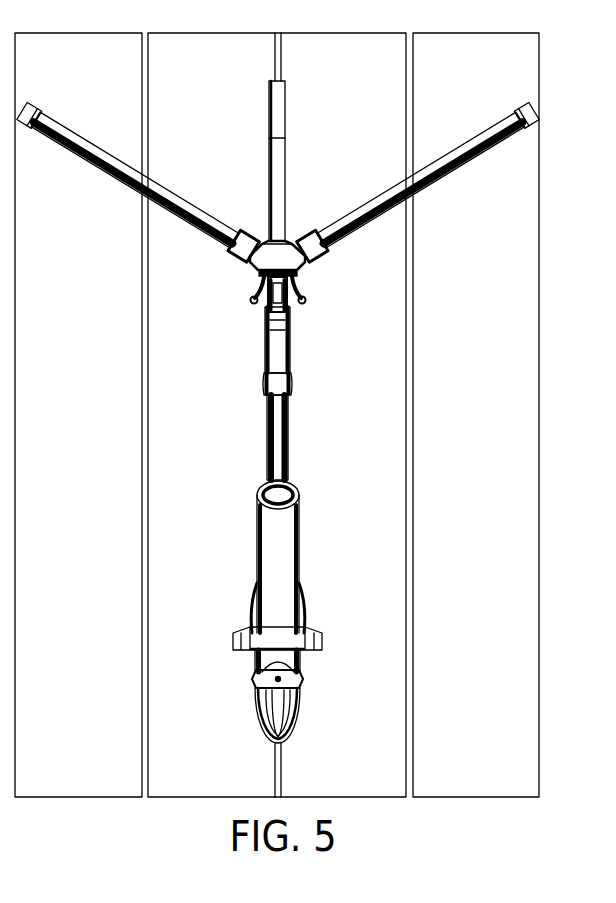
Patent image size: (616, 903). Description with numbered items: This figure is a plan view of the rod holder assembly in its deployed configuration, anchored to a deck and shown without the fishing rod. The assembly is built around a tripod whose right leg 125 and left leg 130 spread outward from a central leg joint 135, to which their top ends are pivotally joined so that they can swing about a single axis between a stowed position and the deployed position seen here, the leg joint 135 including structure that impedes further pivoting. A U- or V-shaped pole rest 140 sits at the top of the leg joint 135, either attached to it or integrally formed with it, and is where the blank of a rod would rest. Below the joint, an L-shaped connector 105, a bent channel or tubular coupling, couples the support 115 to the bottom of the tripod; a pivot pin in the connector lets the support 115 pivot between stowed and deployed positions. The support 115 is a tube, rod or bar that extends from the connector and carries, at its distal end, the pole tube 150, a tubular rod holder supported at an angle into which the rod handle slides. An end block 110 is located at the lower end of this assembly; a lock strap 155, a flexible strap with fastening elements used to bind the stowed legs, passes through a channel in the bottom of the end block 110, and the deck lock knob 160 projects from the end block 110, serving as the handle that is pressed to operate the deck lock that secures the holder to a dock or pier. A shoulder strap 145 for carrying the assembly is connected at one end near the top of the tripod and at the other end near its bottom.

The L-shaped connector 105 is at (275, 340).
The end block 110 is at (267, 657).
The support 115 is at (278, 423).
The right leg 125 is at (461, 152).
The left leg 130 is at (100, 163).
The leg joint 135 is at (297, 263).
The pole rest 140 is at (250, 295).
The shoulder strap 145 is at (284, 108).
The pole tube 150 is at (278, 537).
The lock strap 155 is at (283, 640).
The deck lock knob 160 is at (293, 680).